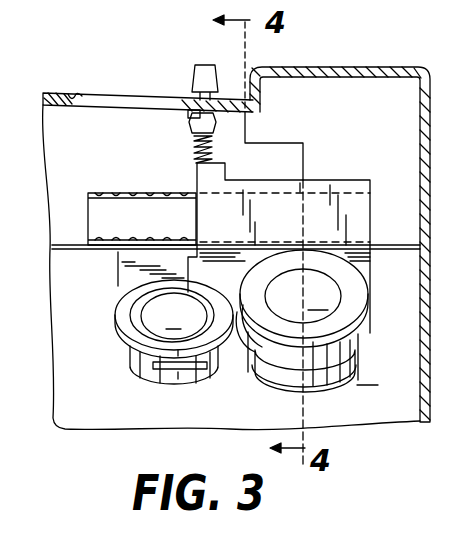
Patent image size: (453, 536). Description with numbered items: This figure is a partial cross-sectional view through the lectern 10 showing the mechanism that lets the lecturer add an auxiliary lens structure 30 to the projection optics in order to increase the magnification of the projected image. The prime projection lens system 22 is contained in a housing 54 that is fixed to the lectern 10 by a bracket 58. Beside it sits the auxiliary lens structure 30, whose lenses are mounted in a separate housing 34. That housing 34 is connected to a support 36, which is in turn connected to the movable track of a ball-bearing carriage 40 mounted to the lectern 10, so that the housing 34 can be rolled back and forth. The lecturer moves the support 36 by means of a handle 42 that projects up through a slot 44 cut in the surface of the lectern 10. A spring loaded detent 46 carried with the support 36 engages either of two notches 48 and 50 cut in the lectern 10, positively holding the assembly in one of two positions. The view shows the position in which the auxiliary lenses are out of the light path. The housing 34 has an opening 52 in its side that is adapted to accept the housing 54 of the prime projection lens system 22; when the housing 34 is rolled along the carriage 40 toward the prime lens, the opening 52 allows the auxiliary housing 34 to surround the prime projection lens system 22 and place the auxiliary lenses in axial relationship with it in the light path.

The lectern 10 is at (379, 58).
The prime projection lens system 22 is at (130, 372).
The auxiliary lens structure 30 is at (260, 414).
The housing 34 is at (354, 387).
The support 36 is at (369, 179).
The ball-bearing carriage 40 is at (117, 191).
The handle 42 is at (200, 66).
The slot 44 is at (73, 93).
The spring loaded detent 46 is at (194, 123).
The notch 48 is at (194, 111).
The notch 50 is at (73, 106).
The opening 52 is at (252, 352).
The housing 54 is at (156, 377).
The bracket 58 is at (118, 285).